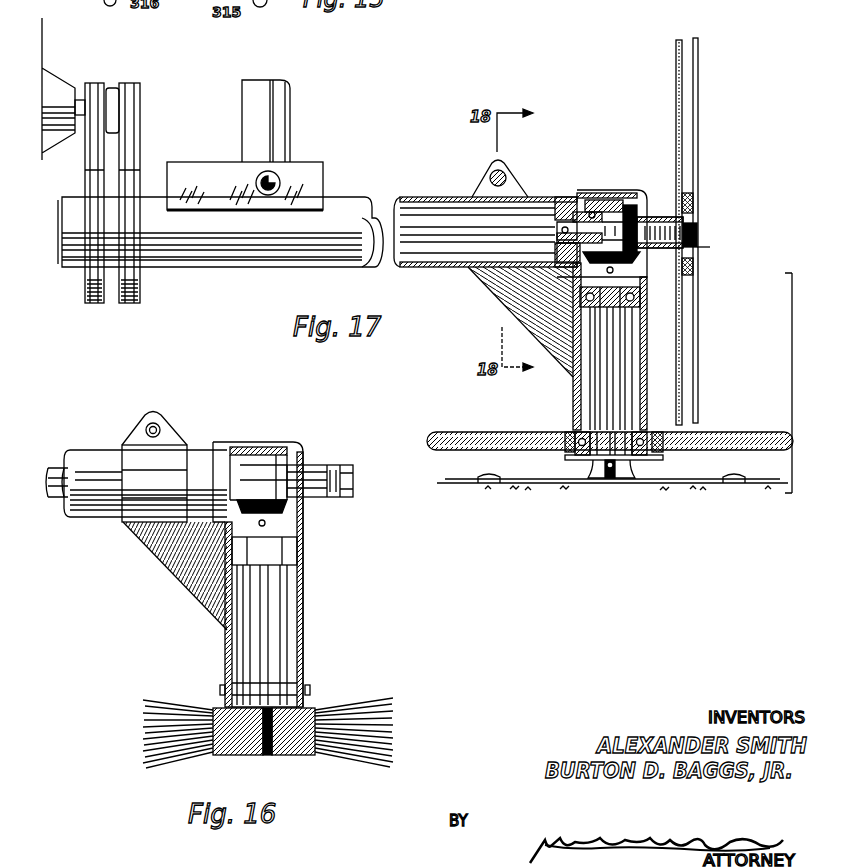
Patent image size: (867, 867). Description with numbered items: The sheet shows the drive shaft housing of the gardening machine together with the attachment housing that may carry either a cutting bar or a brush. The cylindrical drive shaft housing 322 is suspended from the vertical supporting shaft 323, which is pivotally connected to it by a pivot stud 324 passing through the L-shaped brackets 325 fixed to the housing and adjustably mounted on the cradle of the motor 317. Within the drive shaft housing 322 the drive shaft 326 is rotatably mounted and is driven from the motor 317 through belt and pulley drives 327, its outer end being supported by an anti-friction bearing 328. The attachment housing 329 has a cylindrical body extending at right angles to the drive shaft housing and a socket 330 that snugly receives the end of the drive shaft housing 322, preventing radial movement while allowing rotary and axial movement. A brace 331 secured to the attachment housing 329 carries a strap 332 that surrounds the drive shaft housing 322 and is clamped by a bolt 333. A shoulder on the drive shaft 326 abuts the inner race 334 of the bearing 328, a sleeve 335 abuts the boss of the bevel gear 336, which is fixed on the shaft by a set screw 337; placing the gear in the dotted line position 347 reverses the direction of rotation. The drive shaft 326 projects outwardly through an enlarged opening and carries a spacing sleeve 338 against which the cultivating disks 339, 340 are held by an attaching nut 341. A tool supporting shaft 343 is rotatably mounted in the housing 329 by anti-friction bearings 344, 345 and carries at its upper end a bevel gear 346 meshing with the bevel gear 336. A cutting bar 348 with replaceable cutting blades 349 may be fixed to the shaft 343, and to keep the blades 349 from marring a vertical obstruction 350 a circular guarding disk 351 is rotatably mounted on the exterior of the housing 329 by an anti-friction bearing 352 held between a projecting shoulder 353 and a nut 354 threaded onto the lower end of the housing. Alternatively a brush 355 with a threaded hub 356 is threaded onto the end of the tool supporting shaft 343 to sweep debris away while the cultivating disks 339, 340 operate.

In FIG. 17, the motor 317 is at (58, 84).
In FIG. 17, the belt and pulley drives 327 is at (130, 153).
In FIG. 17, the drive shaft housing 322 is at (292, 255).
In FIG. 16, the drive shaft housing 322 is at (82, 518).
In FIG. 17, the drive shaft 326 is at (380, 255).
In FIG. 16, the drive shaft 326 is at (58, 462).
In FIG. 17, the L-shaped brackets 325 is at (208, 170).
In FIG. 17, the vertical supporting shaft 323 is at (288, 113).
In FIG. 17, the pivot stud 324 is at (275, 178).
In FIG. 16, the bolt 333 is at (150, 420).
In FIG. 16, the strap 332 is at (122, 525).
In FIG. 16, the brace 331 is at (172, 560).
In FIG. 16, the socket 330 is at (240, 447).
In FIG. 16, the inner race 334 is at (550, 197).
In FIG. 16, the anti-friction bearing 328 is at (553, 246).
In FIG. 16, the sleeve 335 is at (598, 212).
In FIG. 16, the dotted line position 347 is at (590, 187).
In FIG. 16, the bevel gear 336 is at (625, 200).
In FIG. 16, the spacing sleeve 338 is at (663, 213).
In FIG. 16, the attaching nut 341 is at (340, 459).
In FIG. 16, the cultivating disk 339 is at (680, 42).
In FIG. 16, the cultivating disk 340 is at (698, 65).
In FIG. 16, the set screw 337 is at (636, 243).
In FIG. 16, the bevel gear 346 is at (643, 270).
In FIG. 16, the anti-friction bearing 344 is at (650, 312).
In FIG. 16, the tool supporting shaft 343 is at (602, 382).
In FIG. 16, the attachment housing 329 is at (650, 373).
In FIG. 16, the vertical obstruction 350 is at (792, 365).
In FIG. 16, the guarding disk 351 is at (748, 432).
In FIG. 16, the anti-friction bearing 352 is at (568, 430).
In FIG. 16, the projecting shoulder 353 is at (652, 432).
In FIG. 16, the nut 354 is at (655, 455).
In FIG. 16, the anti-friction bearing 345 is at (627, 469).
In FIG. 16, the cutting bar 348 is at (560, 483).
In FIG. 16, the cutting blades 349 is at (466, 486).
In FIG. 16, the threaded hub 356 is at (280, 752).
In FIG. 16, the brush 355 is at (338, 752).